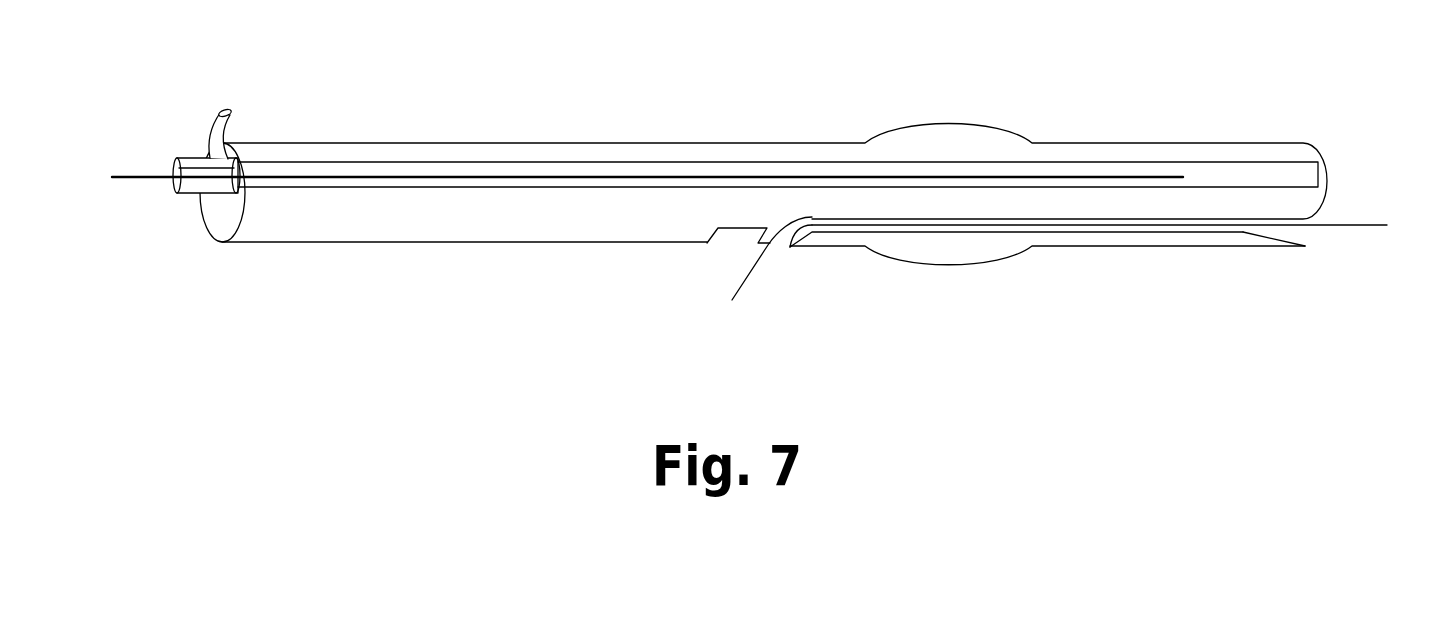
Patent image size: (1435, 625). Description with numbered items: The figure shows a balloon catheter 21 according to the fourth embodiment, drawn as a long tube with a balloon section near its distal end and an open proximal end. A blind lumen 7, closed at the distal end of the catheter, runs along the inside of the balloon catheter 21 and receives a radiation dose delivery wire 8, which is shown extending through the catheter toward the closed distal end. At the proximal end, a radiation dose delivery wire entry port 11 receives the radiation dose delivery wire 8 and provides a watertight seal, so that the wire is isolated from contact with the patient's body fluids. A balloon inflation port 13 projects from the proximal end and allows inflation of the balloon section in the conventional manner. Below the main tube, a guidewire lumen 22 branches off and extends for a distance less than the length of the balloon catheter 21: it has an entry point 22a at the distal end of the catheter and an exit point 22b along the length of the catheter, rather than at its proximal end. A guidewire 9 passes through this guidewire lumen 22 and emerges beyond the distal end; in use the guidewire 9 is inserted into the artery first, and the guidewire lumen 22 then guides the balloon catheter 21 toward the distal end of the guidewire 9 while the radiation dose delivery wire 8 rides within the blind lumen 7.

The blind lumen 7 is at (535, 161).
The radiation dose delivery wire 8 is at (152, 177).
The guidewire 9 is at (1367, 226).
The radiation dose delivery wire entry port 11 is at (193, 158).
The balloon inflation port 13 is at (230, 128).
The balloon catheter 21 is at (660, 143).
The guidewire lumen 22 is at (707, 243).
The entry point 22a is at (1305, 246).
The exit point 22b is at (790, 247).